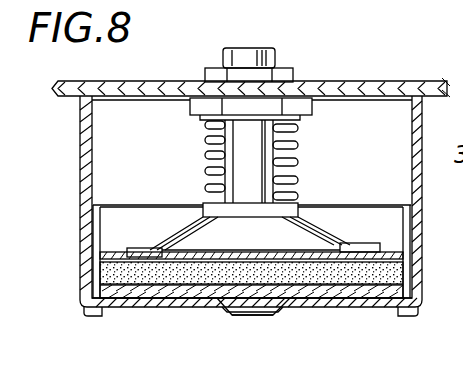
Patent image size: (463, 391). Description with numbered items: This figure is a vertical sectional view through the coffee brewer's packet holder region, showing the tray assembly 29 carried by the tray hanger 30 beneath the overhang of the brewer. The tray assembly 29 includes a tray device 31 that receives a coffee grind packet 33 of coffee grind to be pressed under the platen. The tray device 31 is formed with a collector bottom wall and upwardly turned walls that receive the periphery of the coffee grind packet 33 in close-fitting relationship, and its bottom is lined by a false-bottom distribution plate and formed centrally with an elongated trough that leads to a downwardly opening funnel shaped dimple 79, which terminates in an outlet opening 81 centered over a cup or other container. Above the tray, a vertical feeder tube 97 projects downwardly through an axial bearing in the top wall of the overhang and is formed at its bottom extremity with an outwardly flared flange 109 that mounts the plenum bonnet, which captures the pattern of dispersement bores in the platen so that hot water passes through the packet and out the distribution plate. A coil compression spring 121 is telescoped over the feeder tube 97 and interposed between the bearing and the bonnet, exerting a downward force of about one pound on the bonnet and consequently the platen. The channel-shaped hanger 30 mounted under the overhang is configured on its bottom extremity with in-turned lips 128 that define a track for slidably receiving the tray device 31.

The tray assembly 29 is at (76, 179).
The tray hanger 30 is at (77, 205).
The tray device 31 is at (158, 309).
The coffee grind packet 33 is at (355, 300).
The funnel shaped dimple 79 is at (285, 309).
The outlet opening 81 is at (250, 318).
The feeder tube 97 is at (236, 164).
The outwardly flared flange 109 is at (188, 240).
The coil compression spring 121 is at (300, 148).
The in-turned lips 128 is at (95, 312).